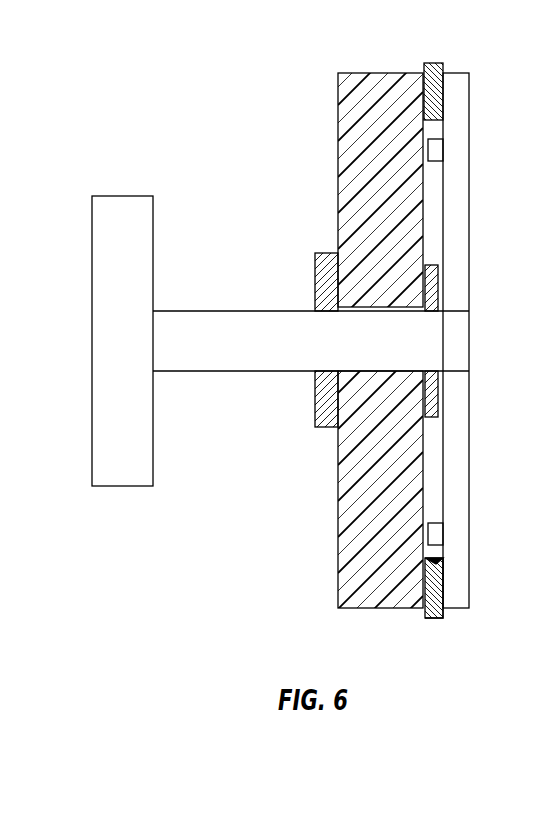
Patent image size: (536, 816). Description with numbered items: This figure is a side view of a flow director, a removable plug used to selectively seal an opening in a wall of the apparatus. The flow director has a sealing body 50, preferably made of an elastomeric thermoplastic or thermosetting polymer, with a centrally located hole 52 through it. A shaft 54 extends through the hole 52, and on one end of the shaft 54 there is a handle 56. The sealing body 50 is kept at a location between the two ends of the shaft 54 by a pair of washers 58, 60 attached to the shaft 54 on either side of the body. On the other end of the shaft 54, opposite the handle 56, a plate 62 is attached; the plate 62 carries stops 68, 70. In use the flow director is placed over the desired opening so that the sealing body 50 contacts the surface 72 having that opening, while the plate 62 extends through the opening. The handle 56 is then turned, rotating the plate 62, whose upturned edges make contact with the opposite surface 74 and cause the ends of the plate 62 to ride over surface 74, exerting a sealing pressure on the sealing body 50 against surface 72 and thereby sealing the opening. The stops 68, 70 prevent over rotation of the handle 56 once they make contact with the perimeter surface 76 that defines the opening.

The sealing body 50 is at (378, 73).
The hole 52 is at (337, 390).
The shaft 54 is at (252, 315).
The handle 56 is at (100, 228).
The washer 58 is at (318, 253).
The washer 60 is at (440, 282).
The plate 62 is at (469, 200).
The stop 68 is at (438, 152).
The stop 70 is at (438, 532).
The surface 72 is at (425, 612).
The opposite surface 74 is at (444, 612).
The perimeter surface 76 is at (436, 558).